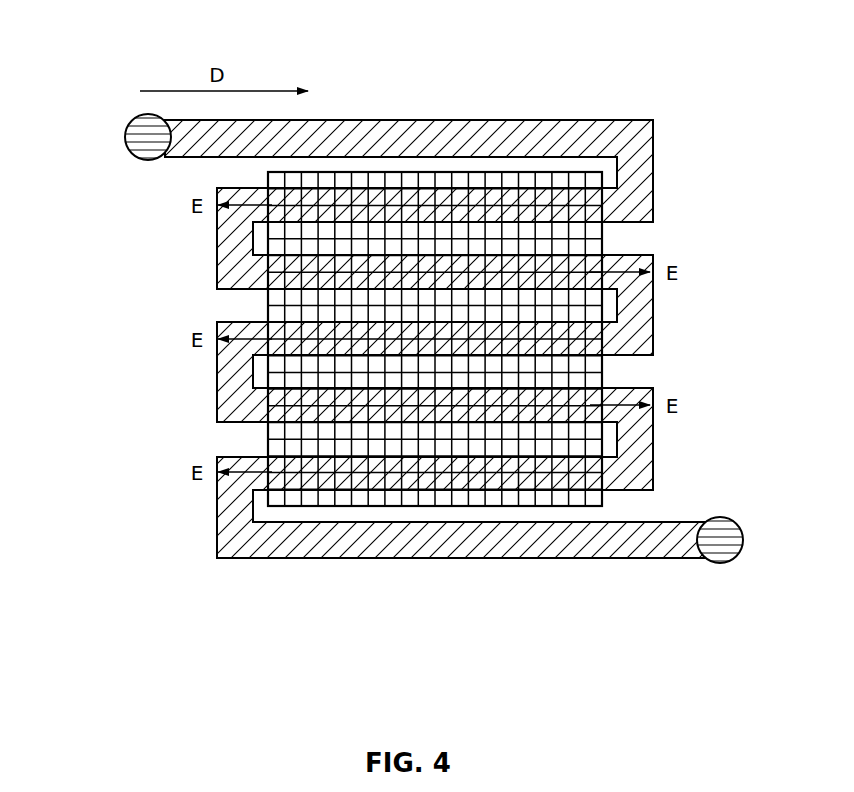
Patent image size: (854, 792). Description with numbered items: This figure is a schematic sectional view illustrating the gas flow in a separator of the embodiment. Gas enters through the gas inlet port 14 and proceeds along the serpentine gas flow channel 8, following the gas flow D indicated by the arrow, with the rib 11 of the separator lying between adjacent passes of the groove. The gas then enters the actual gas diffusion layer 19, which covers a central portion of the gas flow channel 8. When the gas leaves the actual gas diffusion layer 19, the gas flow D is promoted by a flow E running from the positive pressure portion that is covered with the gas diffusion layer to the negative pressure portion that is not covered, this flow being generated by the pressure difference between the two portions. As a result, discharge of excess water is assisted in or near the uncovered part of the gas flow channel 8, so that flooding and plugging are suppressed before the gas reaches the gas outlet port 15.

The gas flow channel 8 is at (513, 133).
The rib 11 is at (427, 323).
The gas inlet port 14 is at (137, 138).
The gas outlet port 15 is at (733, 540).
The actual gas diffusion layer 19 is at (268, 443).